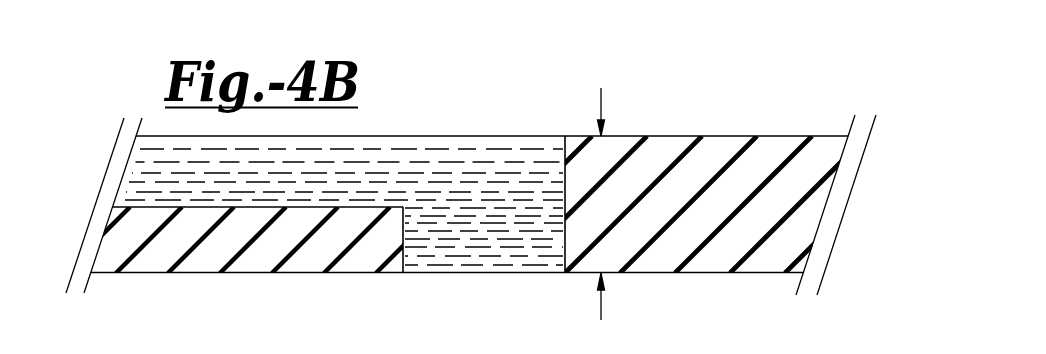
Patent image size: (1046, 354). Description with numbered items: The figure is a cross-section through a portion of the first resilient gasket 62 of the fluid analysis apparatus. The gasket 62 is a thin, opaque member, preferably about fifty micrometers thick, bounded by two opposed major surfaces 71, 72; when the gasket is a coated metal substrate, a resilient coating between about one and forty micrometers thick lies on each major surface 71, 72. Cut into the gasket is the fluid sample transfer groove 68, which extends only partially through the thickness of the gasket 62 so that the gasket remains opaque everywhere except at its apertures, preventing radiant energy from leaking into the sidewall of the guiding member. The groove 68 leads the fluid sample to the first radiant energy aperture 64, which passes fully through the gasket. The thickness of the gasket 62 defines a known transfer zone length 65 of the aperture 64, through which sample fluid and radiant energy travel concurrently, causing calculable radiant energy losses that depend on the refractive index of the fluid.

The first resilient gasket 62 is at (722, 137).
The first radiant energy aperture 64 is at (563, 168).
The transfer zone length 65 is at (603, 92).
The fluid sample transfer groove 68 is at (157, 136).
The major surface 71 is at (757, 137).
The major surface 72 is at (262, 273).